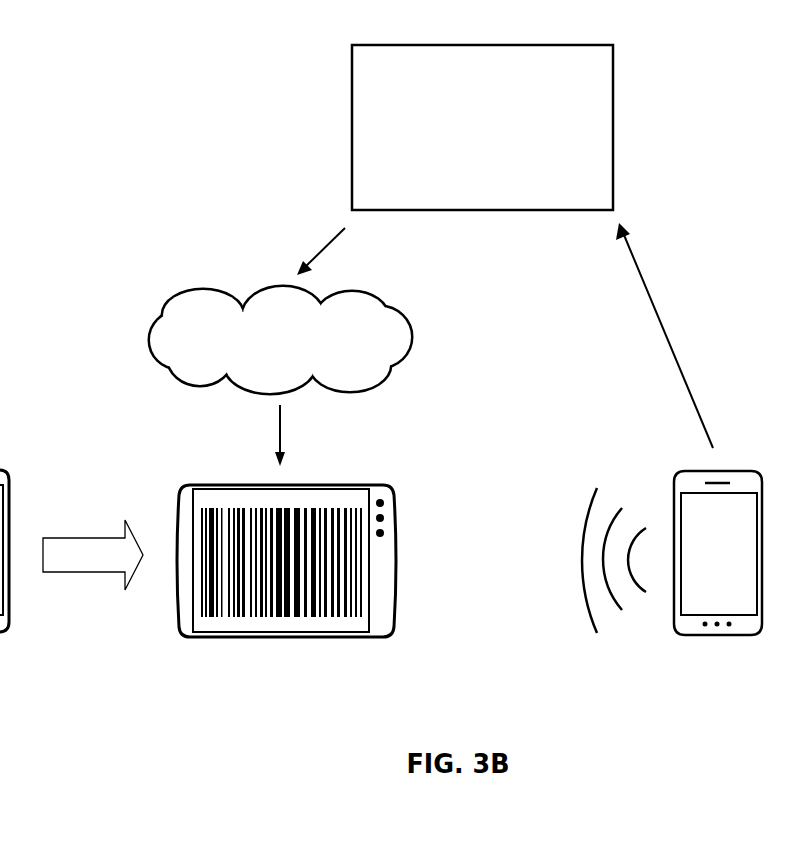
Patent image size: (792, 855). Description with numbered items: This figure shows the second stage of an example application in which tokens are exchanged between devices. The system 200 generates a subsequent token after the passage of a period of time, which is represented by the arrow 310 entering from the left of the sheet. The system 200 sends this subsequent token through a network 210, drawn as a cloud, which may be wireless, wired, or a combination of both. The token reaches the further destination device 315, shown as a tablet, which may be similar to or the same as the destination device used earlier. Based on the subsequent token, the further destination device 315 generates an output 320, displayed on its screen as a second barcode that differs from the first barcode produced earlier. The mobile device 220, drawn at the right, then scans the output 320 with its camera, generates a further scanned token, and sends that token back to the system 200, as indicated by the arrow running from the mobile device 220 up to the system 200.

The system 200 is at (502, 150).
The network 210 is at (262, 352).
The arrow 310 is at (75, 566).
The further destination device 315 is at (267, 670).
The output 320 is at (238, 580).
The mobile device 220 is at (700, 671).